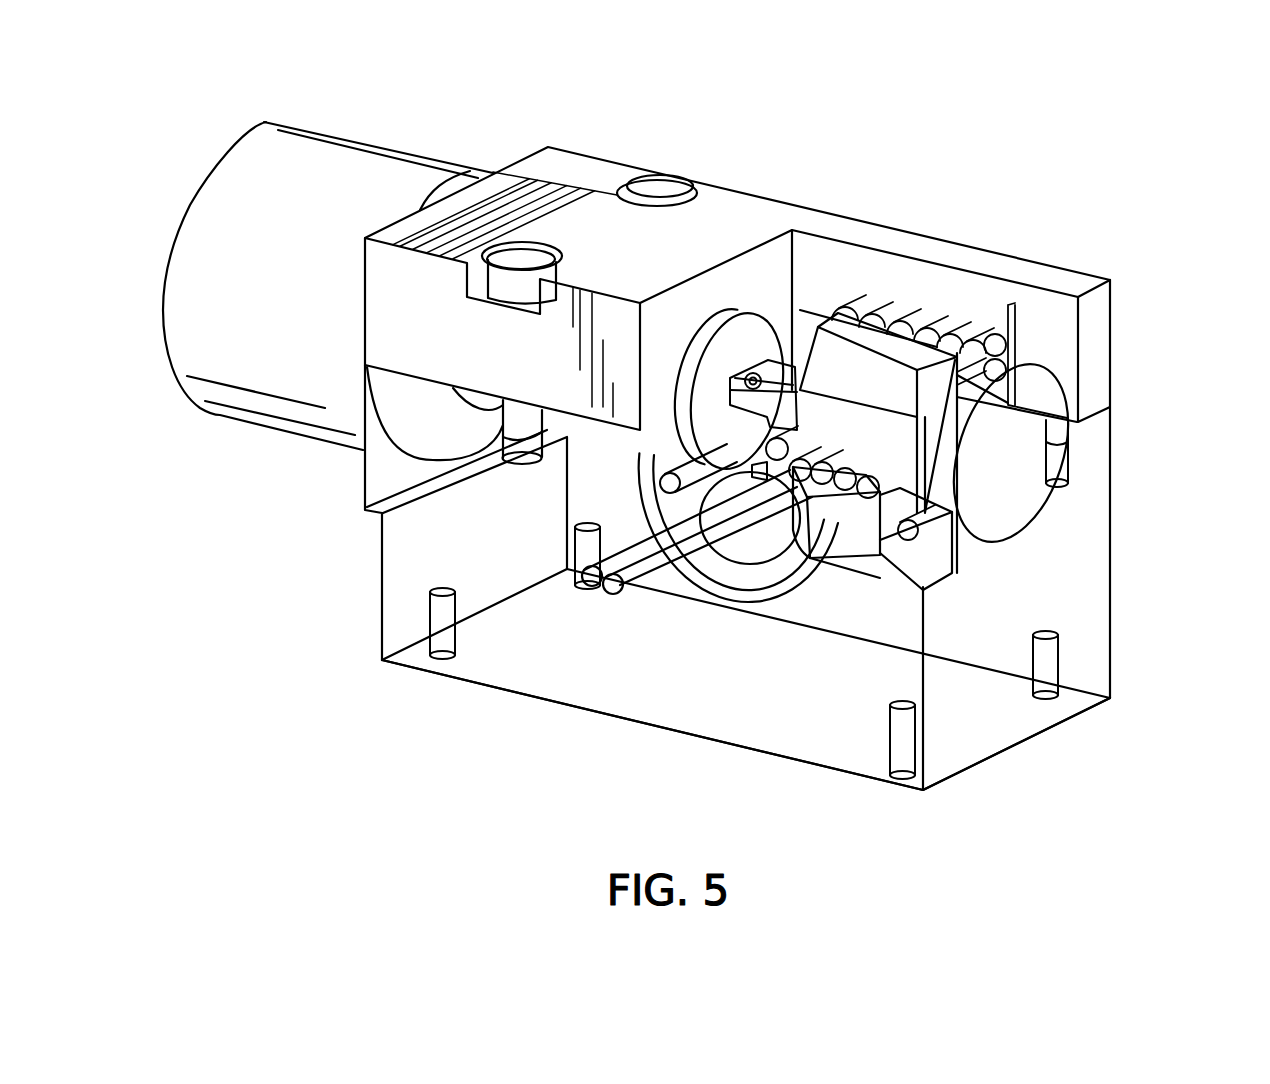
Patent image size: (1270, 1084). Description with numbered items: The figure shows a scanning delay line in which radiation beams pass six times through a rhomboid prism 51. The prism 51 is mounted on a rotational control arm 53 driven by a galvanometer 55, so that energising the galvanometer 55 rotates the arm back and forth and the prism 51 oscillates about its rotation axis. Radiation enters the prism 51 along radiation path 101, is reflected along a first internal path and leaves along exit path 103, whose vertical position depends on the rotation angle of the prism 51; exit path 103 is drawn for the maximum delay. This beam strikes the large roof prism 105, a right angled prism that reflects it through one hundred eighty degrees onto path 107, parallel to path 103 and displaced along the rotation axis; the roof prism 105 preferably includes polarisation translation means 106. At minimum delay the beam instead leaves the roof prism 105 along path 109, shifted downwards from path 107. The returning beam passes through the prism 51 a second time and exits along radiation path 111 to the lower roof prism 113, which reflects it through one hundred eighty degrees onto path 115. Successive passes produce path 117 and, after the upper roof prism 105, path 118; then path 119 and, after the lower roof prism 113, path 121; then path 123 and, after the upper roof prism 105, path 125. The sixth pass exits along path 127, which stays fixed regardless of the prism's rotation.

The galvanometer 55 is at (427, 152).
The rotational control arm 53 is at (770, 360).
The rhomboid prism 51 is at (795, 372).
The exit path 103 is at (858, 322).
The path 125 is at (893, 318).
The path 117 is at (923, 322).
The path 118 is at (948, 333).
The path 123 is at (983, 340).
The path 107 is at (992, 346).
The polarisation translation means 106 is at (1015, 353).
The large roof prism 105 is at (1000, 368).
The path 109 is at (967, 440).
The path 115 is at (805, 478).
The path 119 is at (826, 495).
The path 121 is at (858, 496).
The radiation path 111 is at (912, 520).
The radiation path 101 is at (592, 586).
The path 127 is at (613, 594).
The lower roof prism 113 is at (843, 560).